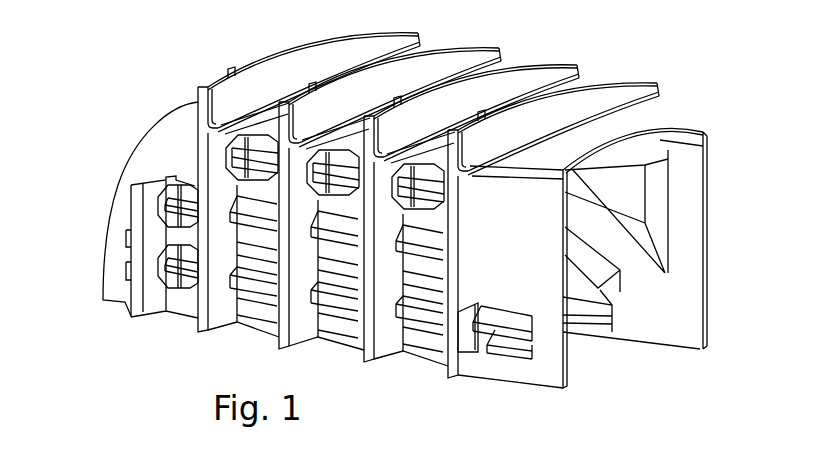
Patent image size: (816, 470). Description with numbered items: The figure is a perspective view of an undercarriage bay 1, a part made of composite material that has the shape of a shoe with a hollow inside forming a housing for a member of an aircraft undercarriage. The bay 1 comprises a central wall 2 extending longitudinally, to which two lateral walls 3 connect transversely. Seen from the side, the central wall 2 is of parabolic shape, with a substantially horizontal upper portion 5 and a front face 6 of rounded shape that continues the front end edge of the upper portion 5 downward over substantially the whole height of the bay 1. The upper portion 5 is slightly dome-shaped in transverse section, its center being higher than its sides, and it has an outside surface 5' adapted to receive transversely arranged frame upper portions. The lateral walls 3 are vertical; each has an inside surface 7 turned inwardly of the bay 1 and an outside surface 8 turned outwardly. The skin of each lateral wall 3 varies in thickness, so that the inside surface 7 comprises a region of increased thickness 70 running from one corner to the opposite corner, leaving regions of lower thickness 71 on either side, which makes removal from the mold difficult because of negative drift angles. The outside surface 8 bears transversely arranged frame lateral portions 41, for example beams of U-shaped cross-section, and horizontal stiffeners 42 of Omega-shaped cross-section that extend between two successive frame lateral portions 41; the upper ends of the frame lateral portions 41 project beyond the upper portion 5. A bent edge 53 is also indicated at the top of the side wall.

The undercarriage bay 1 is at (83, 340).
The central wall 2 is at (715, 125).
The lateral walls 3 is at (692, 307).
The upper portion 5 is at (458, 104).
The outside surface 5' is at (633, 105).
The front face 6 is at (198, 102).
The inside surface 7 is at (693, 331).
The outside surface 8 is at (519, 368).
The frame lateral portions 41 is at (297, 338).
The horizontal stiffeners 42 is at (423, 328).
The bent edge 53 is at (703, 145).
The region of increased thickness 70 is at (620, 253).
The regions of lower thickness 71 is at (638, 204).